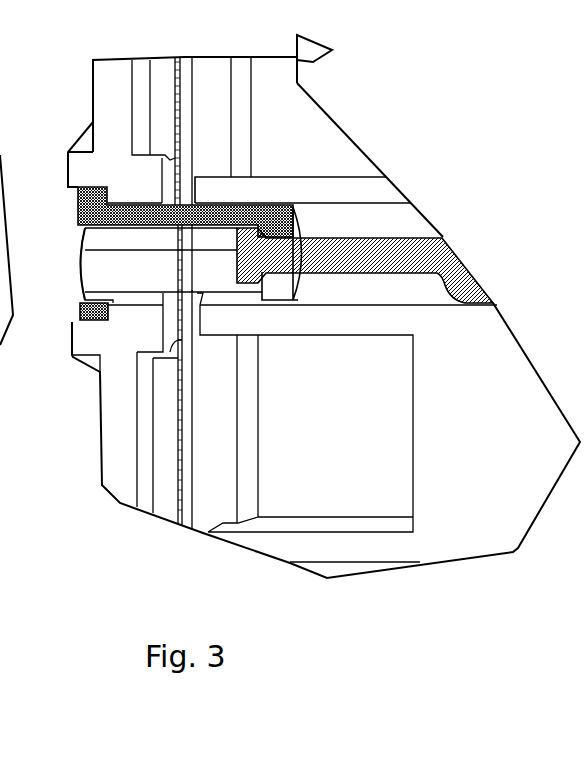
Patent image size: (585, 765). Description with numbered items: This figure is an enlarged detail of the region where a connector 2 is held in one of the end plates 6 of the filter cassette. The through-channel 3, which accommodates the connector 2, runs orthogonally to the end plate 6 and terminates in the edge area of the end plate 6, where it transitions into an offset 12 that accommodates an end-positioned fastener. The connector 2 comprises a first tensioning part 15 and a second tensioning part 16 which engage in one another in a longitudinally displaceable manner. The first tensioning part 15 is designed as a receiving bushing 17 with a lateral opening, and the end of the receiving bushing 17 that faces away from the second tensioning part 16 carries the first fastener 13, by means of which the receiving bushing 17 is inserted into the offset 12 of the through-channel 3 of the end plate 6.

The end plate 6 is at (113, 100).
The connector 2 is at (323, 226).
The second tensioning part 16 is at (370, 262).
The first fastener 13 is at (90, 205).
The offset 12 is at (78, 313).
The first tensioning part 15 is at (140, 242).
The receiving bushing 17 is at (208, 277).
The through-channel 3 is at (368, 292).